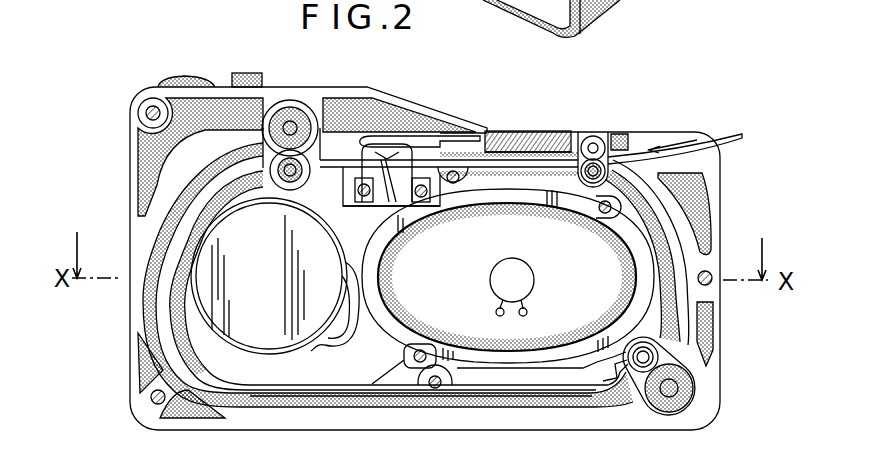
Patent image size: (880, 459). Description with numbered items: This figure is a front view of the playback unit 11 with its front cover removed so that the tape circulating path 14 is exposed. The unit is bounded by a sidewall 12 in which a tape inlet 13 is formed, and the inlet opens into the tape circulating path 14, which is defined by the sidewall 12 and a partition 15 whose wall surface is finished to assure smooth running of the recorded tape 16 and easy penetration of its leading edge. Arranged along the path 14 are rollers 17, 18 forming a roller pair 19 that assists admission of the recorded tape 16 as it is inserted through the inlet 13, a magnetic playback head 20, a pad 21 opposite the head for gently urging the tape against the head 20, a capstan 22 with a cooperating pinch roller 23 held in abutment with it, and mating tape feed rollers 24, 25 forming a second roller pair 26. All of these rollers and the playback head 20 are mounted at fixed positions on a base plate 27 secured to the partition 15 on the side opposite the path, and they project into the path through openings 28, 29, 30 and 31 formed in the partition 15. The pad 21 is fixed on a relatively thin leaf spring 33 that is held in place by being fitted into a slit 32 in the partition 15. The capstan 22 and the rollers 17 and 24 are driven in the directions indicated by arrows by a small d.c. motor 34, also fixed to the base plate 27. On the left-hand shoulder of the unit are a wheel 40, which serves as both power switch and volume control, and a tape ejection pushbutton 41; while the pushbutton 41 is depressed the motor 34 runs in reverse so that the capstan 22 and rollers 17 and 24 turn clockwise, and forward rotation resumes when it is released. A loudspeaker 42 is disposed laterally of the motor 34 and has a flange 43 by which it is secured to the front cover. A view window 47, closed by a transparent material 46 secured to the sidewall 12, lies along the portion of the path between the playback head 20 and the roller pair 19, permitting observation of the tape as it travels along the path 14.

The playback unit 11 is at (316, 78).
The sidewall 12 is at (720, 207).
The tape inlet 13 is at (634, 145).
The tape circulating path 14 is at (195, 172).
The partition 15 is at (335, 382).
The recorded tape 16 is at (722, 142).
The roller 17 is at (586, 186).
The roller 18 is at (600, 140).
The roller pair 19 is at (583, 203).
The magnetic playback head 20 is at (375, 204).
The pad 21 is at (388, 150).
The capstan 22 is at (304, 182).
The pinch roller 23 is at (291, 108).
The tape feed roller 24 is at (617, 362).
The tape feed roller 25 is at (692, 390).
The roller pair 26 is at (642, 380).
The base plate 27 is at (353, 323).
The opening 28 is at (578, 134).
The opening 29 is at (263, 143).
The opening 30 is at (674, 357).
The opening 31 is at (383, 210).
The slit 32 is at (467, 132).
The leaf spring 33 is at (423, 138).
The motor 34 is at (222, 328).
The wheel 40 is at (192, 78).
The tape ejection pushbutton 41 is at (249, 73).
The loudspeaker 42 is at (515, 347).
The flange 43 is at (408, 352).
The transparent material 46 is at (525, 131).
The view window 47 is at (542, 128).